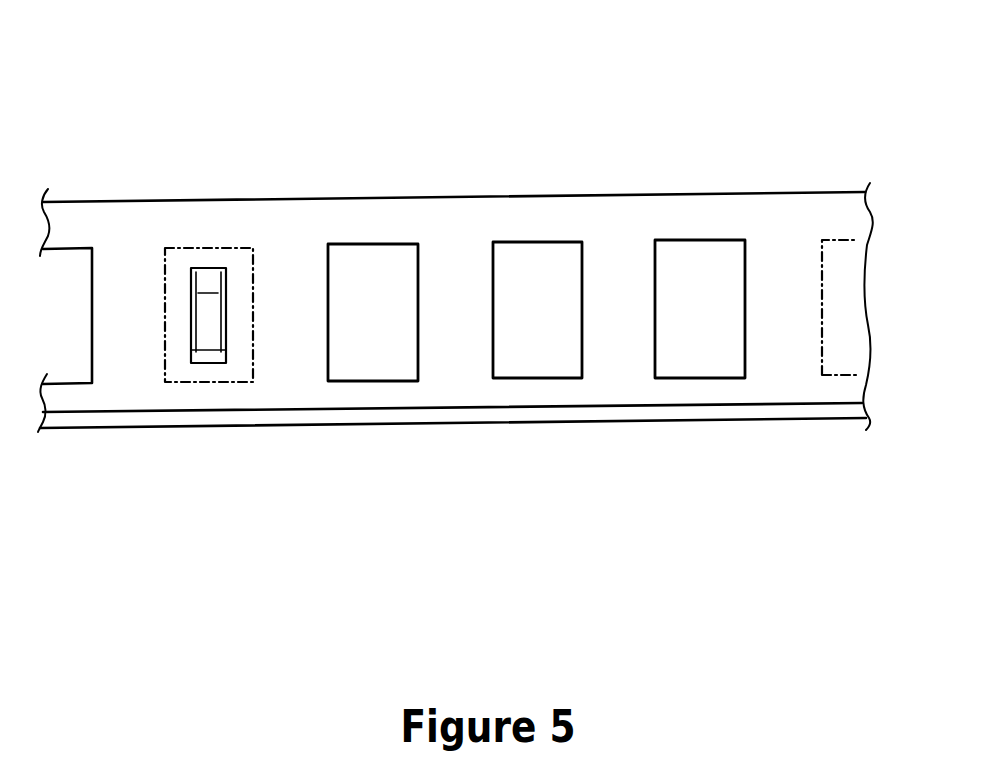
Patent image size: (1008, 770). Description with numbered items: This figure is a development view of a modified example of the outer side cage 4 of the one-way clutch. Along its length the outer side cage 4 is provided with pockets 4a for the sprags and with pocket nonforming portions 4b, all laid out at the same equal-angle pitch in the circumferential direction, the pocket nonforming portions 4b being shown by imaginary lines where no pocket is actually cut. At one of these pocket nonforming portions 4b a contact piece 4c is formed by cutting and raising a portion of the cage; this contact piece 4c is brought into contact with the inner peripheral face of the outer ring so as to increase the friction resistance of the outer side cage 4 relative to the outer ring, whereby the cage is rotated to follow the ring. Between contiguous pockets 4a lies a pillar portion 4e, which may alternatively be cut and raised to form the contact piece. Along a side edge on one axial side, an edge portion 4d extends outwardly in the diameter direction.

The outer side cage 4 is at (388, 172).
The pocket 4a is at (393, 267).
The pocket nonforming portion 4b is at (226, 248).
The contact piece 4c is at (208, 325).
The edge portion 4d is at (733, 413).
The pillar portion 4e is at (453, 347).